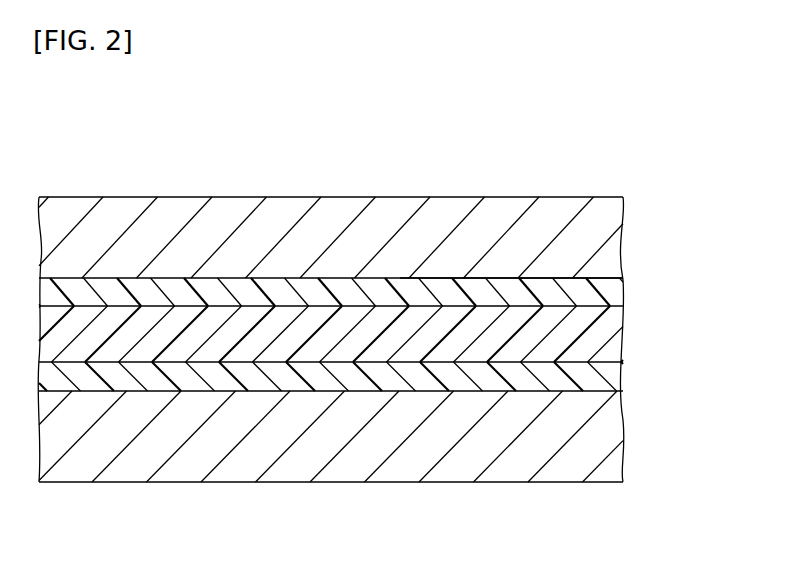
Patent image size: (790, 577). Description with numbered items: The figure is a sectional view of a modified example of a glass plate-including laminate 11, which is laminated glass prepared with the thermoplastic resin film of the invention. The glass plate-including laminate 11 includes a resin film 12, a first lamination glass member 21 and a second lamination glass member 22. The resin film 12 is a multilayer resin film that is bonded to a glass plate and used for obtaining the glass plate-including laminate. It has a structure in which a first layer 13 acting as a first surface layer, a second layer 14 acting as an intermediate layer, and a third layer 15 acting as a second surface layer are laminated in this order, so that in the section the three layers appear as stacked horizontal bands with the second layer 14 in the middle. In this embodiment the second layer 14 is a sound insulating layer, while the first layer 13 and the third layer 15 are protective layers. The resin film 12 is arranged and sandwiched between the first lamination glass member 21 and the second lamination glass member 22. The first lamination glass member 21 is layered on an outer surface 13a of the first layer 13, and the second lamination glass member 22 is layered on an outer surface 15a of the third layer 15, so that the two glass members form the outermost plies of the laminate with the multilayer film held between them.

The glass plate-including laminate 11 is at (162, 170).
The resin film 12 is at (373, 274).
The first layer 13 is at (630, 295).
The outer surface of the first layer 13a is at (547, 277).
The second layer 14 is at (630, 340).
The third layer 15 is at (630, 381).
The outer surface of the third layer 15a is at (541, 392).
The first lamination glass member 21 is at (625, 230).
The second lamination glass member 22 is at (625, 447).